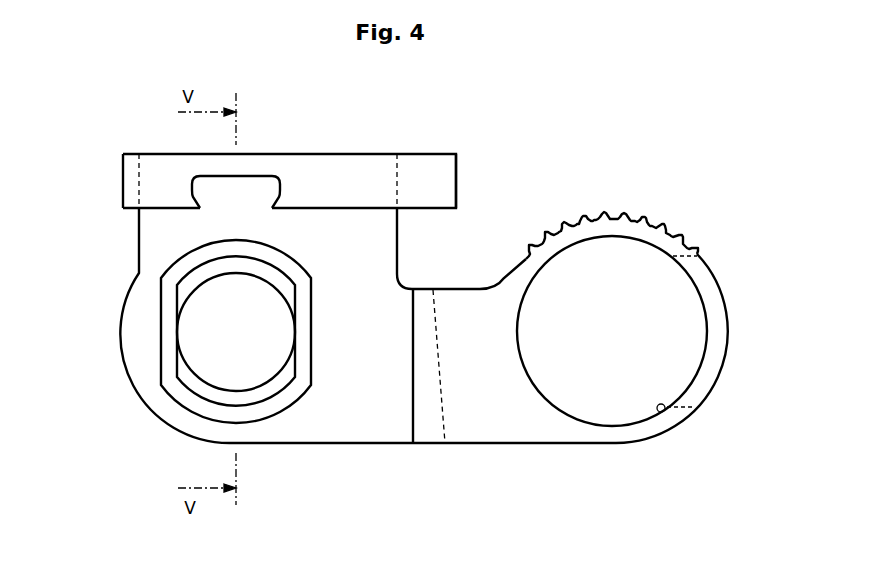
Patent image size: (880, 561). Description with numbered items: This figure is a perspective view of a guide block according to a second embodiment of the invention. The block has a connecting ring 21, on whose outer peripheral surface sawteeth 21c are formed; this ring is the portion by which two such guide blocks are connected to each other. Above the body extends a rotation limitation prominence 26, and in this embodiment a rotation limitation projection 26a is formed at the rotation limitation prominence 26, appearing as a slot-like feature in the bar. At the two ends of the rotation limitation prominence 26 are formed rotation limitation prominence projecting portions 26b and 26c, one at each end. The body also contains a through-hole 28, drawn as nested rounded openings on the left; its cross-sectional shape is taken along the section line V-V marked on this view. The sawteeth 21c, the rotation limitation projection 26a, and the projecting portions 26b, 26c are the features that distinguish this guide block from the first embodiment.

The connecting ring 21 is at (662, 408).
The sawteeth 21c is at (623, 212).
The rotation limitation prominence 26 is at (340, 168).
The rotation limitation projection 26a is at (197, 198).
The rotation limitation prominence projecting portion 26b is at (122, 195).
The rotation limitation prominence projecting portion 26c is at (428, 168).
The through-hole 28 is at (210, 330).